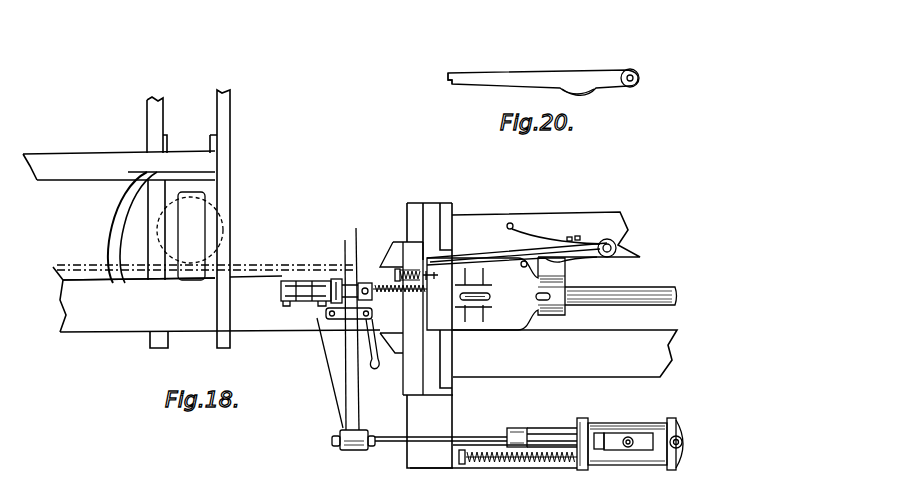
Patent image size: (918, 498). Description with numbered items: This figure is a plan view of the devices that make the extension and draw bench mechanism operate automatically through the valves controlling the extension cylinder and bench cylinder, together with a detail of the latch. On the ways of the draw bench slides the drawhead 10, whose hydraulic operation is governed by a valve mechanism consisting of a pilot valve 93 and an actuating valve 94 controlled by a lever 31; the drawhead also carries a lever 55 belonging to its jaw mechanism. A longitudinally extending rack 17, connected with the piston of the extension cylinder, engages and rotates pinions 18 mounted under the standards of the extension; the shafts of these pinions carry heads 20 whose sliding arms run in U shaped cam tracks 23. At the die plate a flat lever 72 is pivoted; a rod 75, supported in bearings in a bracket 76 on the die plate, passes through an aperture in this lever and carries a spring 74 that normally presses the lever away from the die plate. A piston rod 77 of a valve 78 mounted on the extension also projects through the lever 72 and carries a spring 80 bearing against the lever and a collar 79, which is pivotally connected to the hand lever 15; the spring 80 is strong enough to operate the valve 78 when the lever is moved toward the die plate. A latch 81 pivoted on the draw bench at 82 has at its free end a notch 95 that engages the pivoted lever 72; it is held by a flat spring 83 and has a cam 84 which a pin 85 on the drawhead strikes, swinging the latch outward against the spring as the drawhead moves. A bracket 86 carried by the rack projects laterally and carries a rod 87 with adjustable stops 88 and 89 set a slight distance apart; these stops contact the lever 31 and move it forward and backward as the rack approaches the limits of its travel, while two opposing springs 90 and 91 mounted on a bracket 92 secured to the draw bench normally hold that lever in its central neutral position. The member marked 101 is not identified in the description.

In FIG. 18, the drawhead 10 is at (533, 325).
In FIG. 18, the hand lever 15 is at (381, 371).
In FIG. 18, the longitudinally extending rack 17 is at (57, 278).
In FIG. 18, the pinion 18 is at (210, 203).
In FIG. 18, the head 20 is at (185, 238).
In FIG. 18, the U shaped cam track 23 is at (105, 223).
In FIG. 18, the lever 31 is at (520, 435).
In FIG. 18, the lever 55 is at (492, 297).
In FIG. 18, the flat lever 72 is at (423, 268).
In FIG. 18, the spring 74 is at (412, 270).
In FIG. 18, the rod 75 is at (432, 265).
In FIG. 18, the bracket 76 is at (397, 248).
In FIG. 18, the piston rod 77 is at (343, 327).
In FIG. 18, the valve 78 is at (282, 297).
In FIG. 18, the collar 79 is at (356, 322).
In FIG. 18, the spring 80 is at (388, 282).
In FIG. 18, the latch 81 is at (593, 255).
In FIG. 20, the latch 81 is at (533, 72).
In FIG. 18, the pivot 82 is at (617, 243).
In FIG. 20, the pivot 82 is at (642, 78).
In FIG. 18, the flat spring 83 is at (537, 232).
In FIG. 18, the cam 84 is at (563, 260).
In FIG. 20, the cam 84 is at (590, 91).
In FIG. 18, the pin 85 is at (527, 266).
In FIG. 18, the bracket 86 is at (356, 452).
In FIG. 18, the rod 87 is at (381, 437).
In FIG. 18, the adjustable stop 88 is at (508, 428).
In FIG. 18, the adjustable stop 89 is at (577, 425).
In FIG. 18, the spring 90 is at (483, 468).
In FIG. 18, the spring 91 is at (557, 467).
In FIG. 18, the bracket 92 is at (438, 470).
In FIG. 18, the pilot valve 93 is at (645, 445).
In FIG. 18, the actuating valve 94 is at (630, 425).
In FIG. 20, the notch 95 is at (447, 80).
In FIG. 18, the member 101 is at (150, 495).